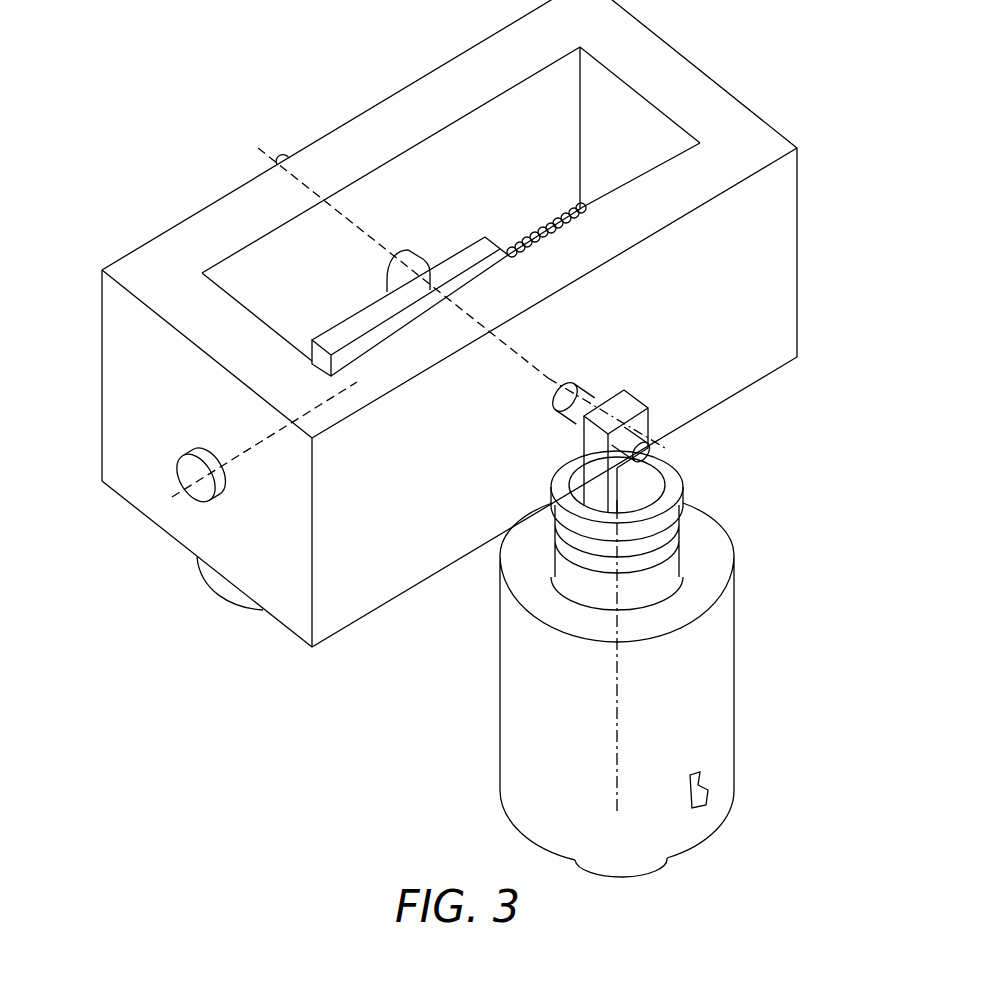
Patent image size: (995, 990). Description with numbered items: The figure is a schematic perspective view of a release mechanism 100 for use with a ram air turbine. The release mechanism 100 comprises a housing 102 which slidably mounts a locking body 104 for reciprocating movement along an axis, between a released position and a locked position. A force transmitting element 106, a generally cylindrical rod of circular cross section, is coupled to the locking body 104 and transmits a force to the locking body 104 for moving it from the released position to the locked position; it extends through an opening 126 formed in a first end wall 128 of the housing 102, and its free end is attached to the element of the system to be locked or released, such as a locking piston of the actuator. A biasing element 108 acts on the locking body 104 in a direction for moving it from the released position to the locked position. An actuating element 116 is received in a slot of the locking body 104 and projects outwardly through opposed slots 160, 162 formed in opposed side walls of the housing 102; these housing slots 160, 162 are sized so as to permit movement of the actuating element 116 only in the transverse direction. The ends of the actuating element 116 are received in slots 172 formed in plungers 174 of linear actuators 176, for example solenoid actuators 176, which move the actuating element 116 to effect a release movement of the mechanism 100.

The release mechanism 100 is at (810, 220).
The housing 102 is at (789, 324).
The locking body 104 is at (471, 256).
The force transmitting element 106 is at (198, 493).
The biasing element 108 is at (617, 183).
The actuating element 116 is at (654, 448).
The opening 126 is at (229, 483).
The first end wall 128 is at (106, 431).
The housing slot 160 is at (561, 418).
The housing slot 162 is at (389, 279).
The slot 172 is at (584, 463).
The plunger 174 is at (633, 400).
The linear actuator 176 is at (728, 685).